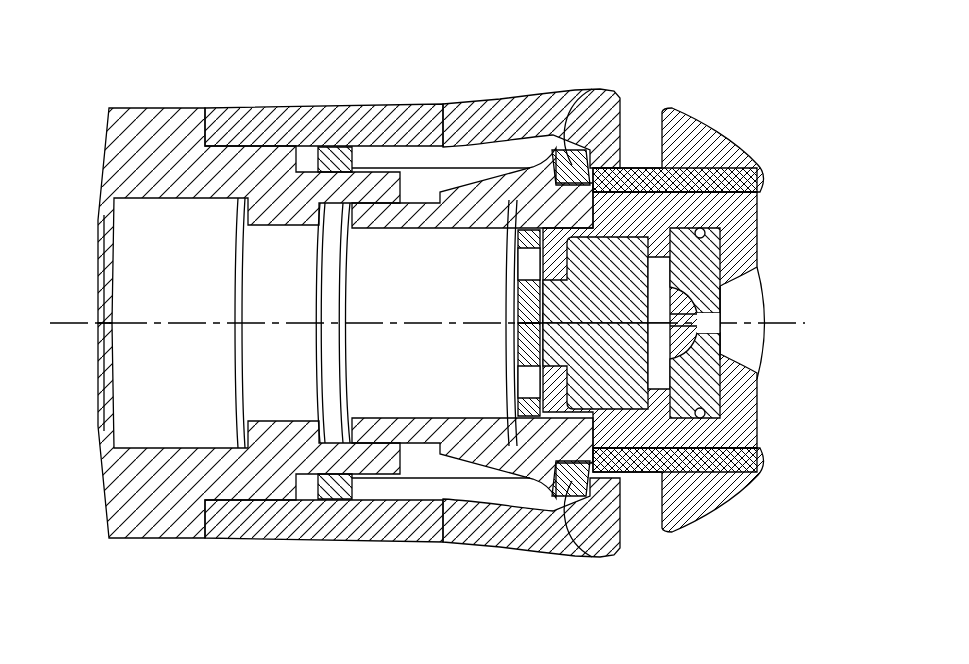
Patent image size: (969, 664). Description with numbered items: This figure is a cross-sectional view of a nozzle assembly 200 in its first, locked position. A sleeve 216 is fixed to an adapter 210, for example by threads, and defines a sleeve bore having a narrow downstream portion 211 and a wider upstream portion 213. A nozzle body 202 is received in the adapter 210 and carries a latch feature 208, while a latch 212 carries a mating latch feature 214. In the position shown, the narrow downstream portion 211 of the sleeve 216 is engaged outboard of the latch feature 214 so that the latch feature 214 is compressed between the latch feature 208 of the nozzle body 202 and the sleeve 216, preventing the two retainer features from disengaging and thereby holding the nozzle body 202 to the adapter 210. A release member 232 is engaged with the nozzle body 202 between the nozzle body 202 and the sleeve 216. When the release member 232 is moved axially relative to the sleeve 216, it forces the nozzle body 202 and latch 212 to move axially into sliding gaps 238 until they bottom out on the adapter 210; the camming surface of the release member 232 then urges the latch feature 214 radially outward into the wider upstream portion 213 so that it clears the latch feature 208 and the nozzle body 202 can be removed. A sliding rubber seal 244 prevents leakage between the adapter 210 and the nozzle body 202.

The nozzle assembly 200 is at (732, 541).
The nozzle body 202 is at (757, 203).
The latch feature 208 is at (537, 165).
The adapter 210 is at (143, 150).
The narrow downstream portion 211 is at (604, 133).
The latch 212 is at (335, 158).
The wider upstream portion 213 is at (540, 108).
The latch feature 214 is at (597, 95).
The sleeve 216 is at (258, 116).
The release member 232 is at (734, 146).
The sliding gaps 238 is at (308, 480).
The sliding rubber seal 244 is at (352, 418).